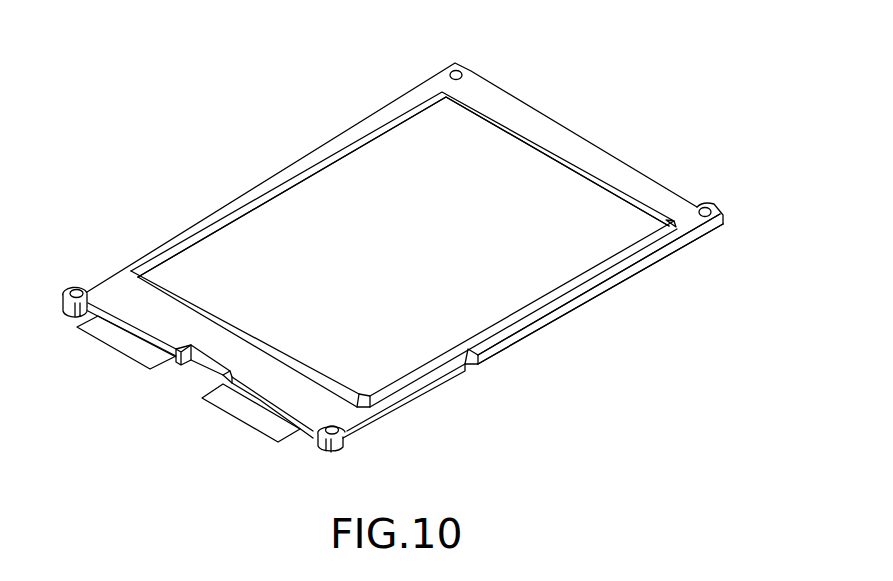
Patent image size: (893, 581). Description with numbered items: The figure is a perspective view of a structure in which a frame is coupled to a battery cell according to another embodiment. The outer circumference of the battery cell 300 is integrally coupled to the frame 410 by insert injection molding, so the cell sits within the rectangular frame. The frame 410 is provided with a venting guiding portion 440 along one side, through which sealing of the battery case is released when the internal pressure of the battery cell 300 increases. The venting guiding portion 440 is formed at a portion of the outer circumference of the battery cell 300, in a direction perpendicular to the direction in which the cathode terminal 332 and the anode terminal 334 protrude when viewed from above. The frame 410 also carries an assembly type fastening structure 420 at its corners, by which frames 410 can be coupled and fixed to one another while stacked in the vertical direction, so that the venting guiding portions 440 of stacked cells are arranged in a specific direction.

The battery cell 300 is at (481, 141).
The frame 410 is at (582, 156).
The assembly type fastening structure 420 is at (452, 70).
The cathode terminal 332 is at (121, 342).
The anode terminal 334 is at (250, 408).
The venting guiding portion 440 is at (450, 384).